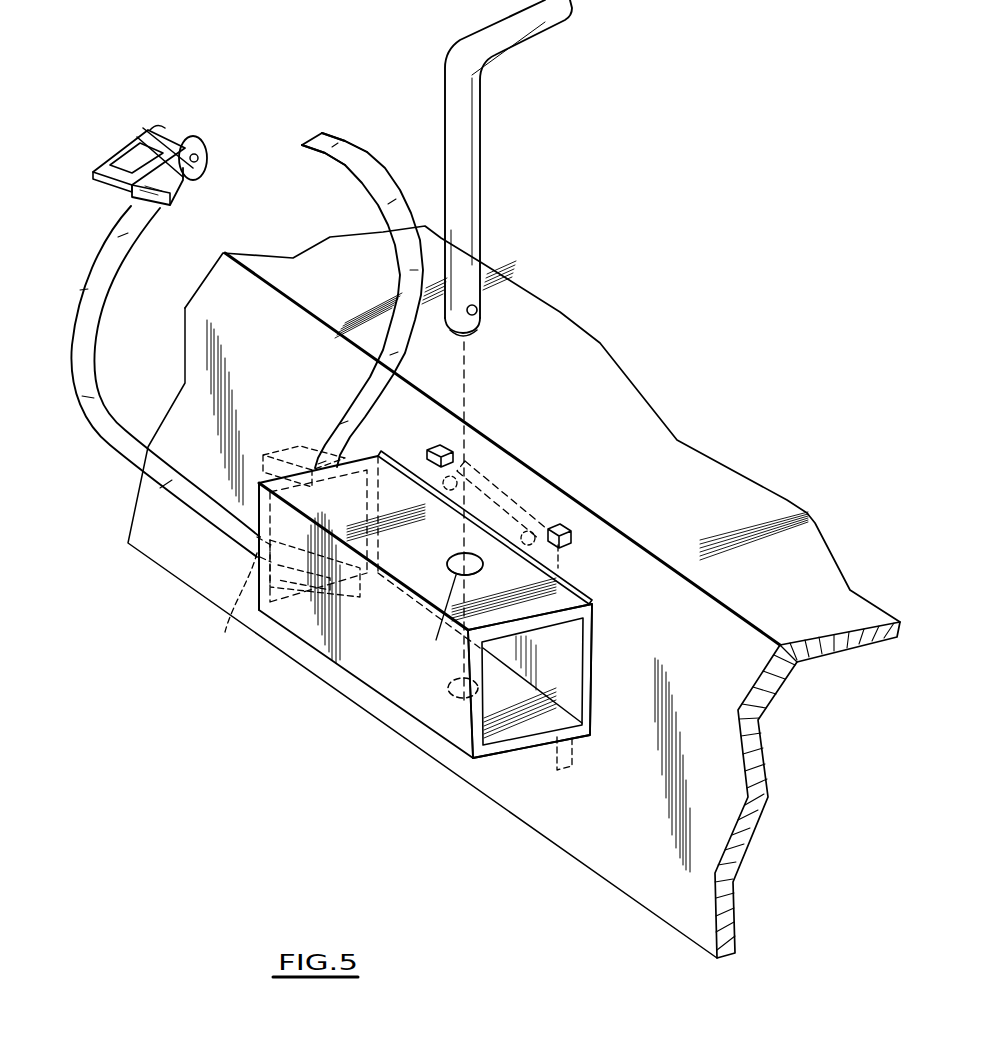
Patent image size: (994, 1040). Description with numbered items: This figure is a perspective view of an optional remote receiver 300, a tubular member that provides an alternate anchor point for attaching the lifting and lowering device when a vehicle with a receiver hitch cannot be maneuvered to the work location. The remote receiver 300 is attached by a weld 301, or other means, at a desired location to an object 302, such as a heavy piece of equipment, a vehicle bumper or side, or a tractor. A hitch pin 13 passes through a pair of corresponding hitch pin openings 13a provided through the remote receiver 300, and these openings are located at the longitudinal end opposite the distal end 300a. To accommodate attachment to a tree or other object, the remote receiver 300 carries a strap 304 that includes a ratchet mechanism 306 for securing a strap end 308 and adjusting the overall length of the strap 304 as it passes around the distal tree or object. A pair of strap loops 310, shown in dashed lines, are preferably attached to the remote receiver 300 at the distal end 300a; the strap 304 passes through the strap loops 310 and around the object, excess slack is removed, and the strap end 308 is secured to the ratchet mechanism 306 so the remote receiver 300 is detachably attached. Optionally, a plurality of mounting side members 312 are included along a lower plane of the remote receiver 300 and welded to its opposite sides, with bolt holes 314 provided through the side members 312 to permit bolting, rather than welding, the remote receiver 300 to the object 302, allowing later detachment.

The hitch pin 13 is at (473, 182).
The hitch pin openings 13a is at (445, 677).
The remote receiver 300 is at (566, 566).
The distal end 300a is at (257, 548).
The weld 301 is at (592, 604).
The object 302 is at (725, 640).
The strap 304 is at (368, 188).
The ratchet mechanism 306 is at (152, 158).
The strap end 308 is at (312, 142).
The strap loops 310 is at (296, 448).
The mounting side members 312 is at (504, 490).
The bolt holes 314 is at (450, 440).